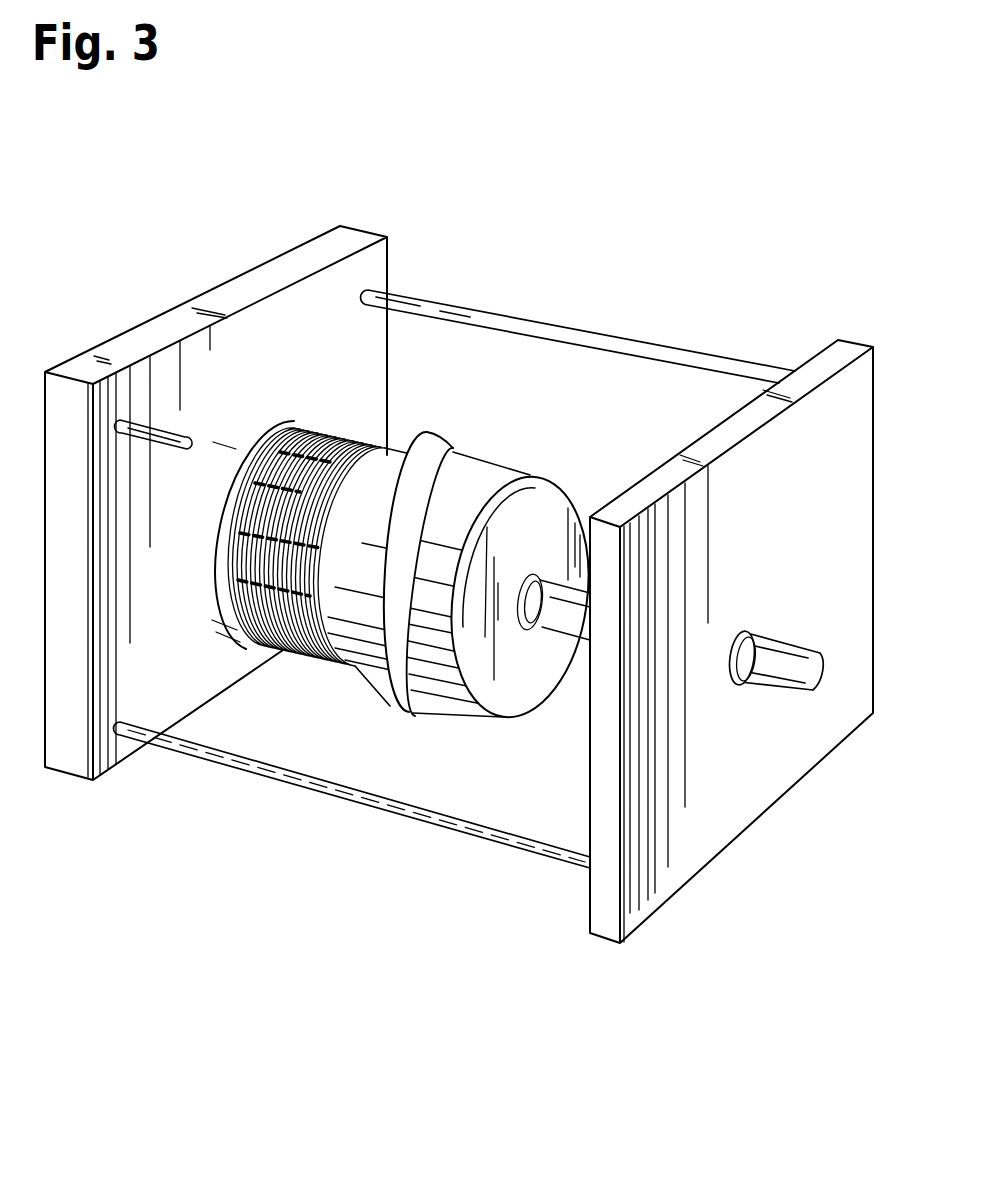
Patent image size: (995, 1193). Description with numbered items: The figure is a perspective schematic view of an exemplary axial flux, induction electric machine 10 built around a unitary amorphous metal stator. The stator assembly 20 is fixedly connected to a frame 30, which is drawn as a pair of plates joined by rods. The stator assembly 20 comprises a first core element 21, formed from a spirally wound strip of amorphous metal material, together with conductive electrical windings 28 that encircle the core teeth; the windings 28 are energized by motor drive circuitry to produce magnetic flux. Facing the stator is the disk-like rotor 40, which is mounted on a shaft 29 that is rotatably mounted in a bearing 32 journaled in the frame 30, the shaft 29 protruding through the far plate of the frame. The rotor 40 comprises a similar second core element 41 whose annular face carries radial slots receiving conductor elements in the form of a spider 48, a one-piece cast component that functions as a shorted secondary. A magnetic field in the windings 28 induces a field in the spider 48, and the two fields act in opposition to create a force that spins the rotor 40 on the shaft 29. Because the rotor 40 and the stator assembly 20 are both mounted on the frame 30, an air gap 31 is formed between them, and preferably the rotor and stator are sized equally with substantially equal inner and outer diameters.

The axial flux induction electric machine 10 is at (459, 568).
The stator assembly 20 is at (276, 529).
The first core element 21 is at (217, 583).
The conductive electrical windings 28 is at (295, 655).
The shaft 29 is at (567, 617).
The frame 30 is at (303, 252).
The air gap 31 is at (392, 443).
The bearing 32 is at (745, 630).
The rotor 40 is at (467, 600).
The second core element 41 is at (447, 680).
The spider 48 is at (382, 696).